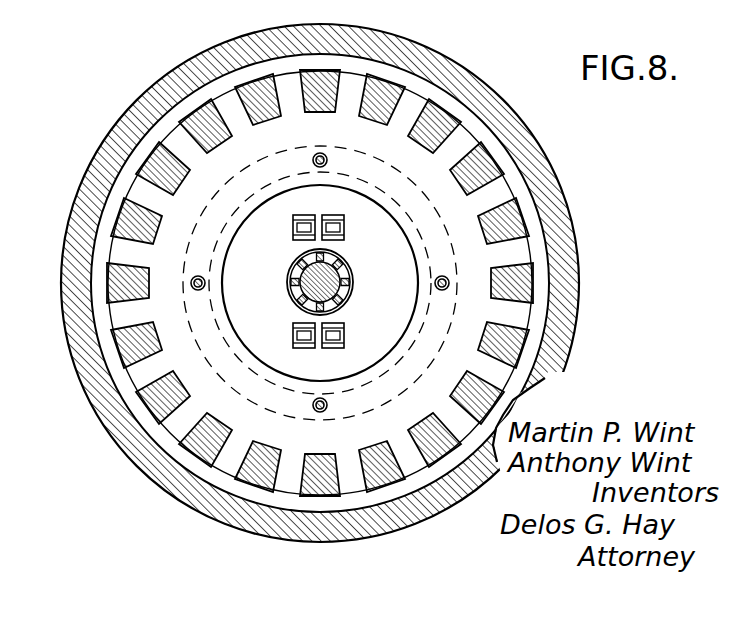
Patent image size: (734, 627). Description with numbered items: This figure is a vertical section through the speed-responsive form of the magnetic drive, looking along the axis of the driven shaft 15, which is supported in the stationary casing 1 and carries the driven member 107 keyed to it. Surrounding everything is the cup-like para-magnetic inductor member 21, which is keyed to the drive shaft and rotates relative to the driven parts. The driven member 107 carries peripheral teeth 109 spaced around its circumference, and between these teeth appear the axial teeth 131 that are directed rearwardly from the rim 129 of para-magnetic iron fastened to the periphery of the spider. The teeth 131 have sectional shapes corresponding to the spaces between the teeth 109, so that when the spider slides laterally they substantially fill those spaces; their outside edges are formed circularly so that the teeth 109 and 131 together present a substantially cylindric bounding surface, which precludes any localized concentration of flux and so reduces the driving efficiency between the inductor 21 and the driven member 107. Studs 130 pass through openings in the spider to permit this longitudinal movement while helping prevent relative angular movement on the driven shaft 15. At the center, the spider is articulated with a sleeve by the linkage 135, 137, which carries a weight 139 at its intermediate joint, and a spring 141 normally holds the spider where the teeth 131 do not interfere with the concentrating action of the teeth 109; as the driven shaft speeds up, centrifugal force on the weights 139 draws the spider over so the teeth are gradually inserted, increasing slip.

The stationary casing 1 is at (228, 380).
The driven shaft 15 is at (291, 286).
The inductor member 21 is at (567, 278).
The driven member 107 is at (338, 136).
The peripheral teeth 109 is at (497, 187).
The rim 129 is at (517, 220).
The studs 130 is at (327, 158).
The axial teeth 131 is at (397, 82).
The linkage 135 is at (300, 240).
The linkage 137 is at (320, 214).
The weight 139 is at (341, 219).
The spring 141 is at (354, 282).